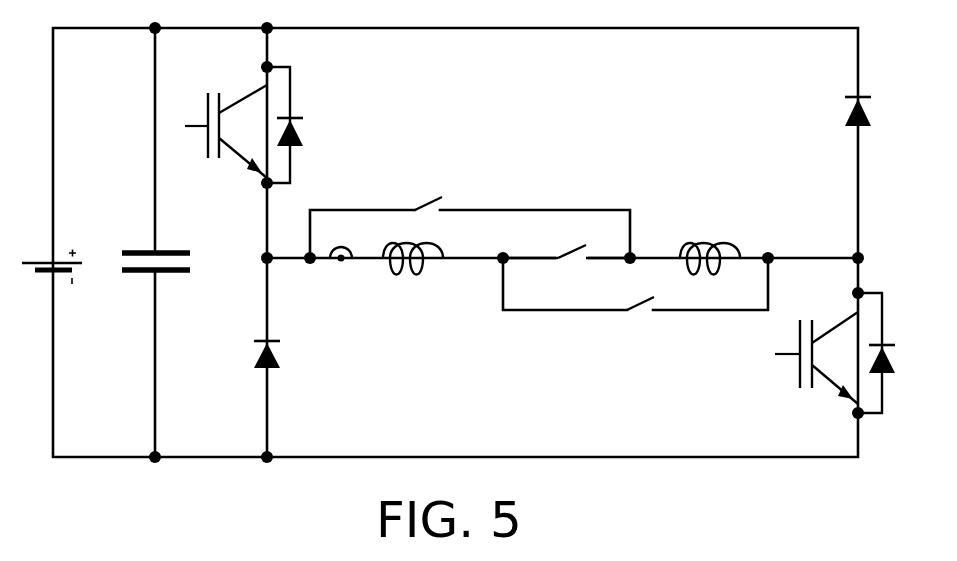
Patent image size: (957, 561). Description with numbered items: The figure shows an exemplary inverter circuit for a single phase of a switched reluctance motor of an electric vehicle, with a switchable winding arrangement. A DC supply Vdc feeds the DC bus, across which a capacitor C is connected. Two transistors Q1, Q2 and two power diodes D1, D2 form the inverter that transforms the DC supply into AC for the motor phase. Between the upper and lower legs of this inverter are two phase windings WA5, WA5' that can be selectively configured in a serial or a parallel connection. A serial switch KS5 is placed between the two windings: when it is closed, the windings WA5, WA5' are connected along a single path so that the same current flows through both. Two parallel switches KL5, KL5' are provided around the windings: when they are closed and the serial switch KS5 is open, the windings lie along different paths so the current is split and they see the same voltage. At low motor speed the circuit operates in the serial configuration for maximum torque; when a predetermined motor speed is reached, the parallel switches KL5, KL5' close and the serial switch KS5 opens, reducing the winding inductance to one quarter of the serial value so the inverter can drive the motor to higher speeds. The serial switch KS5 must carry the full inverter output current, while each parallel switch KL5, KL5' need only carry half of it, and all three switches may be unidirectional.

The DC supply Vdc is at (64, 234).
The capacitor C is at (156, 242).
The transistor Q1 is at (268, 125).
The transistor Q2 is at (835, 365).
The power diode D1 is at (238, 382).
The power diode D2 is at (835, 96).
The winding WA5 is at (386, 282).
The winding WA5' is at (715, 237).
The parallel switch KL5 is at (470, 210).
The parallel switch KL5' is at (635, 308).
The serial switch KS5 is at (566, 244).